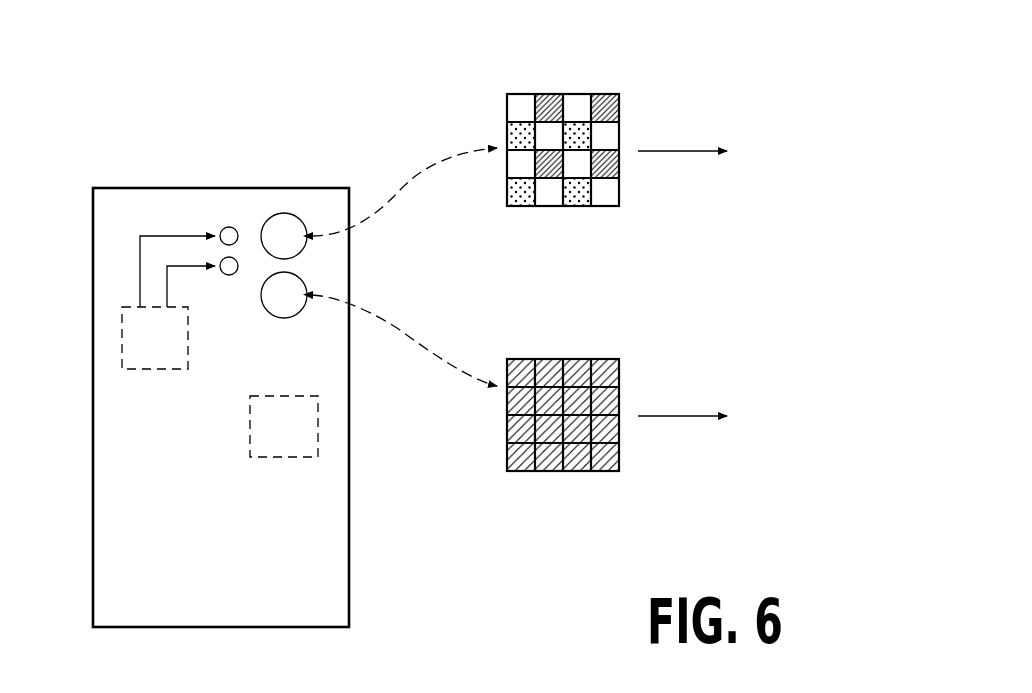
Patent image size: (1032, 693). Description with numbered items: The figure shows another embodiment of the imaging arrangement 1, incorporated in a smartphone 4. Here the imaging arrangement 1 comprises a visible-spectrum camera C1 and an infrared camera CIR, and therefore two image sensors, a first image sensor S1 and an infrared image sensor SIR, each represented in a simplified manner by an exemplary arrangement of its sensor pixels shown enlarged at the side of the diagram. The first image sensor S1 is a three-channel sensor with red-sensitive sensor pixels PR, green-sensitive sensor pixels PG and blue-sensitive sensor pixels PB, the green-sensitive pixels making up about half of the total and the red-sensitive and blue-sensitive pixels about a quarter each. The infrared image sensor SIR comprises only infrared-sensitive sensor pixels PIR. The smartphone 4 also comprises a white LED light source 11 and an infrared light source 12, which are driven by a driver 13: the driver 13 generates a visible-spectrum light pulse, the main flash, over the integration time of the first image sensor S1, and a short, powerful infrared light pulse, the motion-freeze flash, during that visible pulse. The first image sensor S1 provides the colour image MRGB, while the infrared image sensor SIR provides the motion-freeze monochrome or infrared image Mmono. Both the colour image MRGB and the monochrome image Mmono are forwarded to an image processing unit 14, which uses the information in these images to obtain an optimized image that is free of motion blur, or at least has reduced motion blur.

The imaging arrangement 1 is at (234, 342).
The smartphone 4 is at (93, 462).
The white LED light source 11 is at (228, 227).
The infrared light source 12 is at (237, 260).
The driver 13 is at (122, 337).
The image processing unit 14 is at (318, 432).
The visible-spectrum camera C1 is at (291, 213).
The infrared camera CIR is at (301, 279).
The first image sensor S1 is at (600, 134).
The red-sensitive sensor pixels PR is at (609, 104).
The green-sensitive sensor pixels PG is at (611, 136).
The blue-sensitive sensor pixels PB is at (577, 196).
The colour image MRGB is at (722, 156).
The infrared image sensor SIR is at (568, 416).
The infrared-sensitive sensor pixels PIR is at (576, 365).
The monochrome image Mmono is at (727, 421).